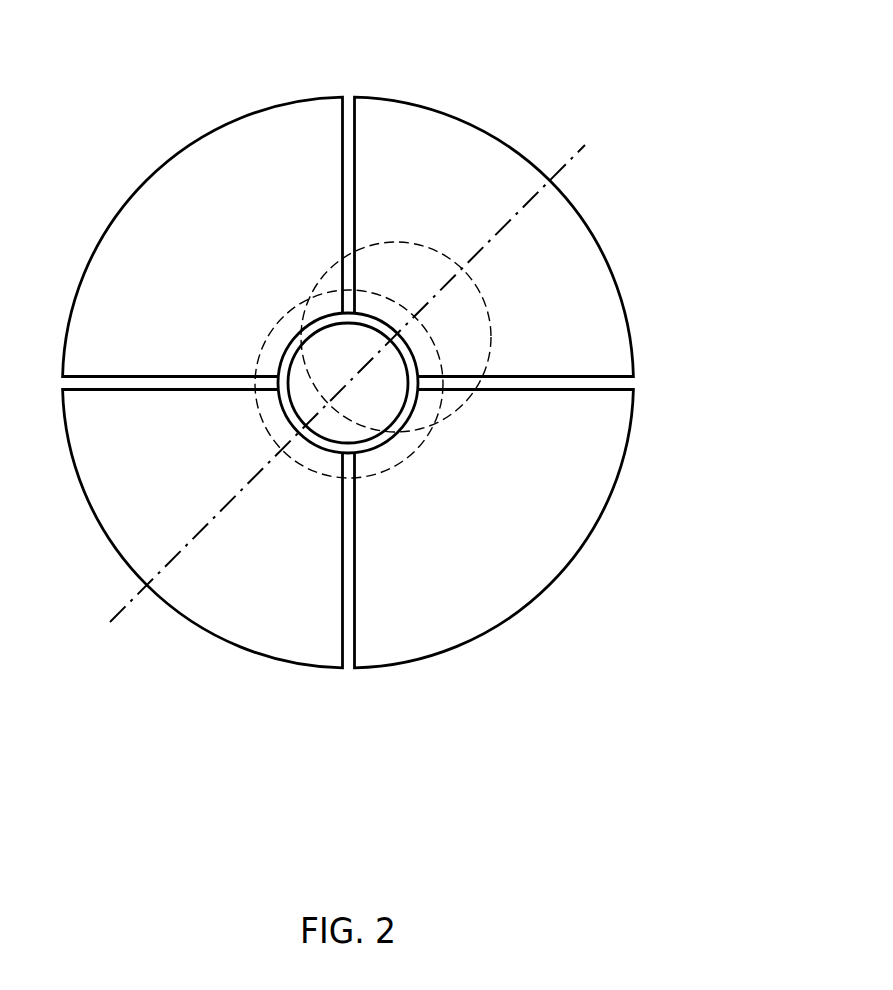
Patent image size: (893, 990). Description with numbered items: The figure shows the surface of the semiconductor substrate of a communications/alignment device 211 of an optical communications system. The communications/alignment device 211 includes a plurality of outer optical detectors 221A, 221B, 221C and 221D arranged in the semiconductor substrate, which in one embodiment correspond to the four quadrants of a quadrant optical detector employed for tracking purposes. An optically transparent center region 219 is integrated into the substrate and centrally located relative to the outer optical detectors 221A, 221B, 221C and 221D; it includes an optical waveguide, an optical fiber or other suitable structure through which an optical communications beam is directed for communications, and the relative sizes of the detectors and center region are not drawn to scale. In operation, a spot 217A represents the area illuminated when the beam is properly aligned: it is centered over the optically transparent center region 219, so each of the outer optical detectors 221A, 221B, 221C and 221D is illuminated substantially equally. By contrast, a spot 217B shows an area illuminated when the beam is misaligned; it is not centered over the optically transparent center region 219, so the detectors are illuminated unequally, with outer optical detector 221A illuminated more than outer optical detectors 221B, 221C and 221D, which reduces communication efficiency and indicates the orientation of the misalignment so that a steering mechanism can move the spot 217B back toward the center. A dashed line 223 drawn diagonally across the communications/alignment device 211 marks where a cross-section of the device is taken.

The communications/alignment device 211 is at (784, 28).
The spot 217A is at (280, 320).
The spot 217B is at (460, 410).
The optically transparent center region 219 is at (287, 402).
The outer optical detector 221A is at (538, 165).
The outer optical detector 221B is at (137, 190).
The outer optical detector 221C is at (157, 600).
The outer optical detector 221D is at (535, 598).
The dashed line 223 is at (572, 167).